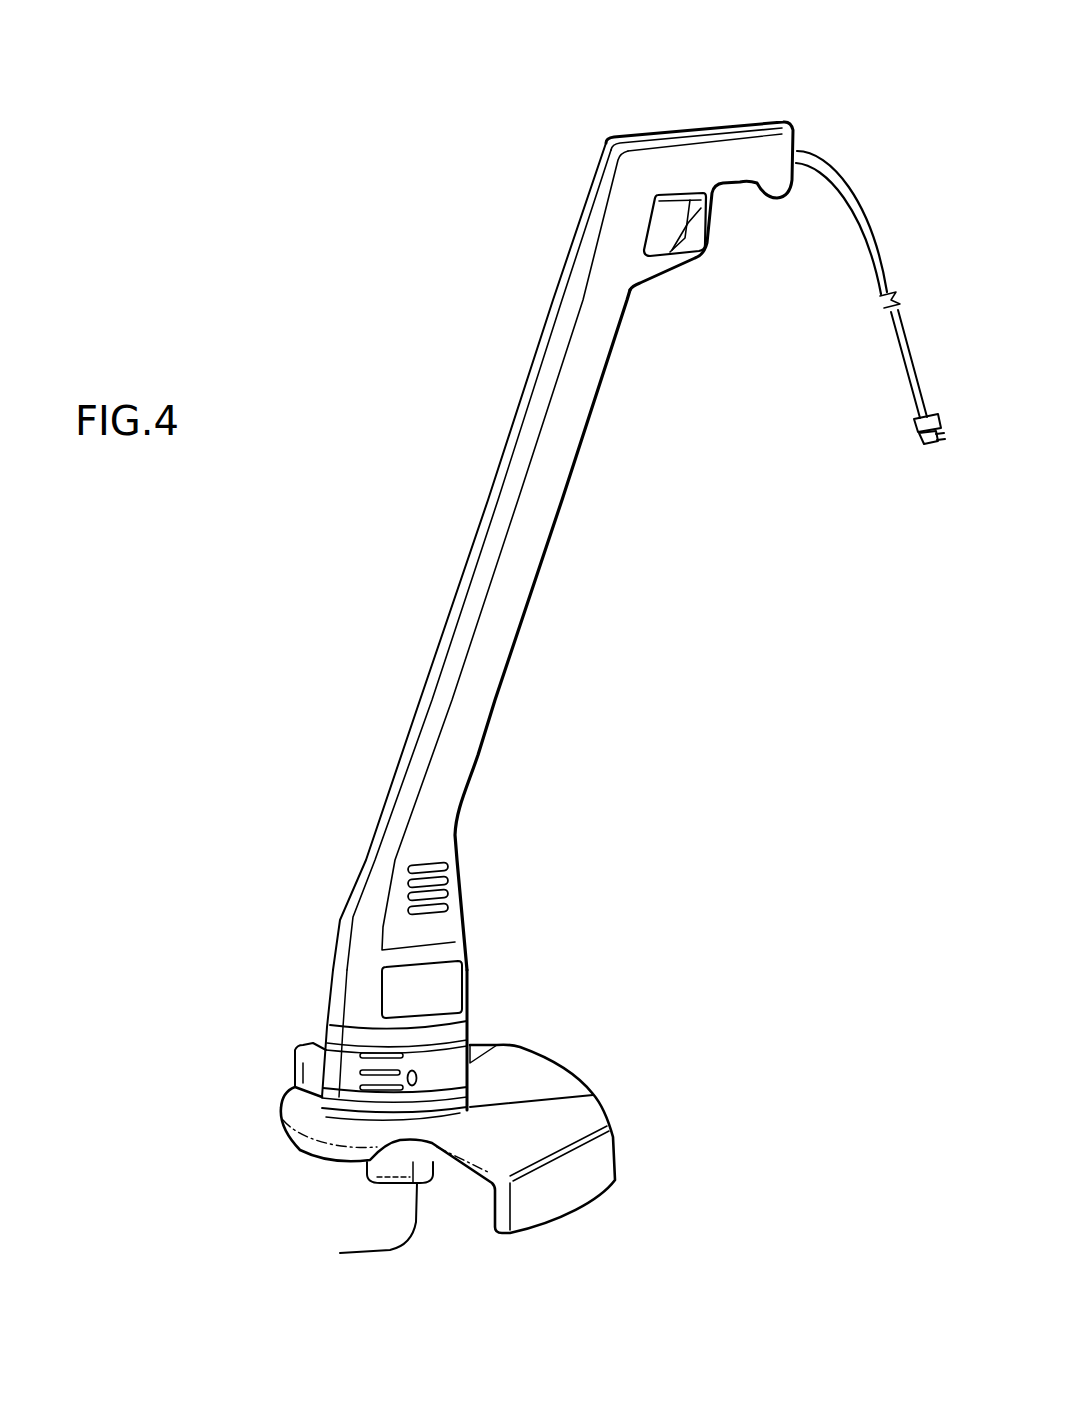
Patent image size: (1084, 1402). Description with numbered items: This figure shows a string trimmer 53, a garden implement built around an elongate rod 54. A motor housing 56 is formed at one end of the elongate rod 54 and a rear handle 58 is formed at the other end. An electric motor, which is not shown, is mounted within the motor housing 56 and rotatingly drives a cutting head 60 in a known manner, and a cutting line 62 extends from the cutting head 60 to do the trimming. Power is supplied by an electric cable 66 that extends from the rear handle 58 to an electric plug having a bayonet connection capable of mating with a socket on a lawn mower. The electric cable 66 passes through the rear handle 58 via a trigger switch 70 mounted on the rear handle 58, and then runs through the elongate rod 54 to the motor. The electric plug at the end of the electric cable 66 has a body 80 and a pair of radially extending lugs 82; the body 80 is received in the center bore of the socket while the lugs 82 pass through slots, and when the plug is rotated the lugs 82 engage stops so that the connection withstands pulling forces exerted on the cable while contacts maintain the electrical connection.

The string trimmer 53 is at (240, 675).
The elongate rod 54 is at (450, 745).
The motor housing 56 is at (407, 1003).
The rear handle 58 is at (675, 165).
The cutting head 60 is at (383, 1167).
The cutting line 62 is at (410, 1232).
The electric cable 66 is at (862, 268).
The trigger switch 70 is at (691, 237).
The body 80 is at (913, 422).
The radially extending lugs 82 is at (913, 441).